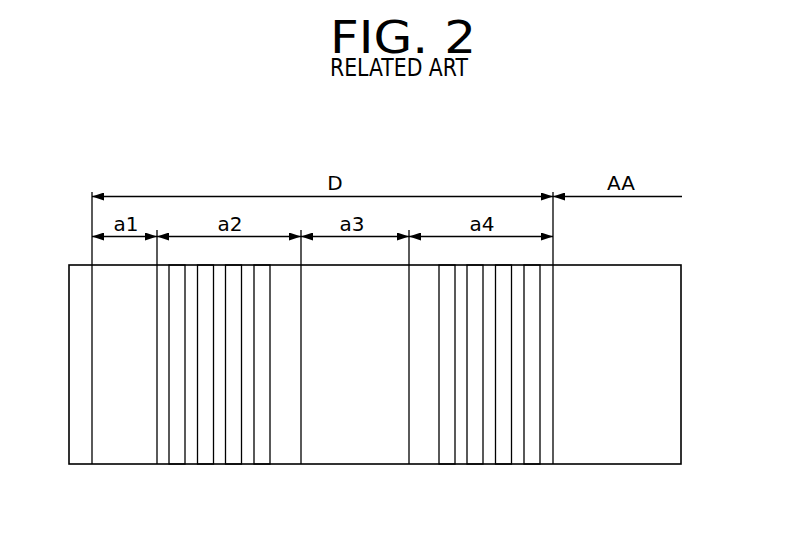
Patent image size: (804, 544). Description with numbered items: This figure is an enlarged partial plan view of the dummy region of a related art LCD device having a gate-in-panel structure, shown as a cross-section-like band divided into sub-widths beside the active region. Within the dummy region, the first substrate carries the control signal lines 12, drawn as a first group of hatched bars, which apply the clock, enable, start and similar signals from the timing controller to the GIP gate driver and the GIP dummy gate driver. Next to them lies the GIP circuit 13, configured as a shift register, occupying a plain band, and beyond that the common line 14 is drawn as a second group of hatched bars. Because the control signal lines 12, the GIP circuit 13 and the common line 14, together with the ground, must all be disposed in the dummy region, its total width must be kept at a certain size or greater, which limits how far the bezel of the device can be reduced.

The control signal lines 12 is at (169, 473).
The GIP circuit 13 is at (356, 456).
The common line 14 is at (439, 473).